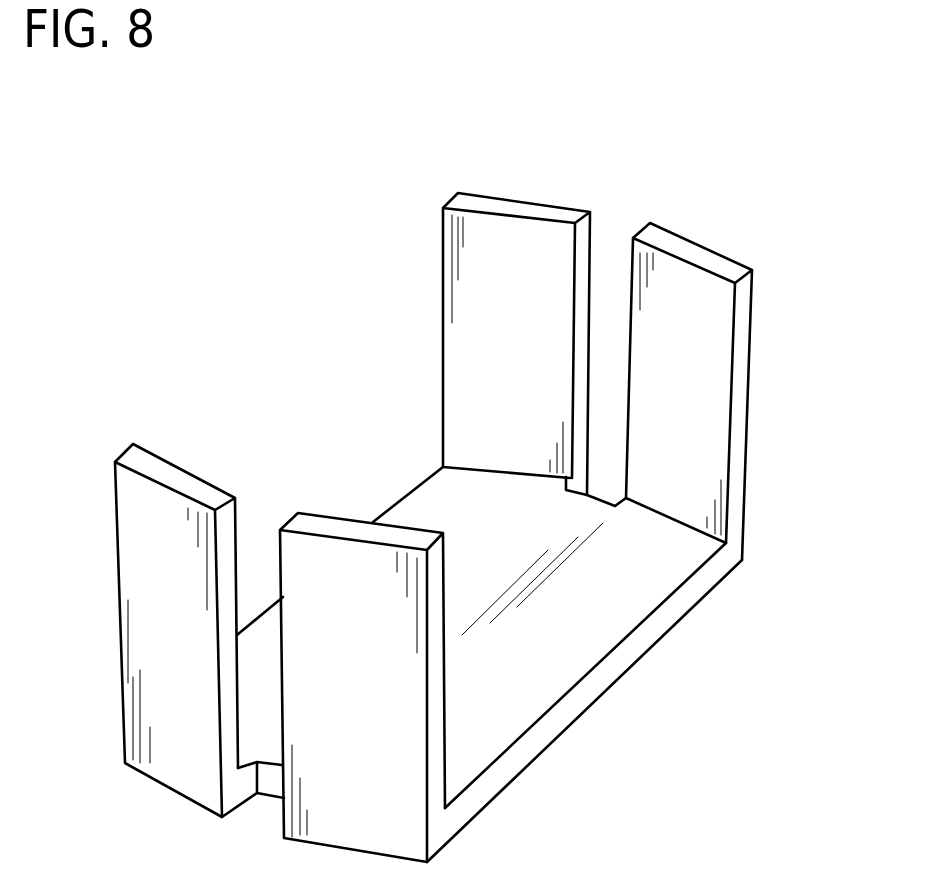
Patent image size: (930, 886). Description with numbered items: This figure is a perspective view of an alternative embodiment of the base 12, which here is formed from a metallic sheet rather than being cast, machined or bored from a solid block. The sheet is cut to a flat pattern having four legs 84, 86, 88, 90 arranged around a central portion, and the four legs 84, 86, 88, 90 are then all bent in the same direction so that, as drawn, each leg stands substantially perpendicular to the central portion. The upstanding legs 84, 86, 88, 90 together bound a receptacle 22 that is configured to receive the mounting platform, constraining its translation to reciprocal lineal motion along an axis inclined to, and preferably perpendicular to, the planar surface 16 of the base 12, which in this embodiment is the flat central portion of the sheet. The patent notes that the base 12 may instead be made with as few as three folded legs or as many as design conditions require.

The base 12 is at (733, 503).
The planar surface 16 is at (540, 753).
The receptacle 22 is at (435, 495).
The leg 84 is at (513, 205).
The leg 86 is at (699, 257).
The leg 88 is at (319, 530).
The leg 90 is at (142, 460).